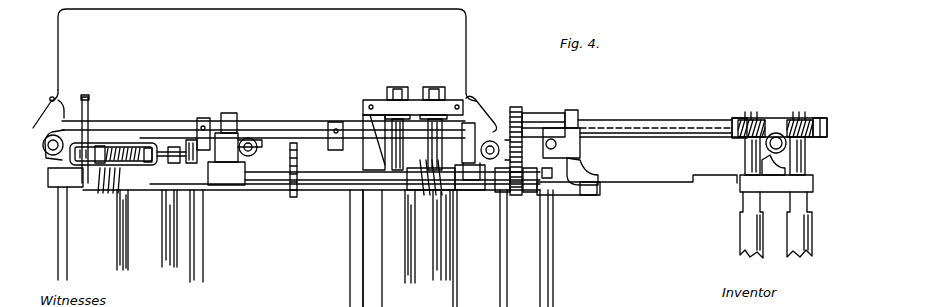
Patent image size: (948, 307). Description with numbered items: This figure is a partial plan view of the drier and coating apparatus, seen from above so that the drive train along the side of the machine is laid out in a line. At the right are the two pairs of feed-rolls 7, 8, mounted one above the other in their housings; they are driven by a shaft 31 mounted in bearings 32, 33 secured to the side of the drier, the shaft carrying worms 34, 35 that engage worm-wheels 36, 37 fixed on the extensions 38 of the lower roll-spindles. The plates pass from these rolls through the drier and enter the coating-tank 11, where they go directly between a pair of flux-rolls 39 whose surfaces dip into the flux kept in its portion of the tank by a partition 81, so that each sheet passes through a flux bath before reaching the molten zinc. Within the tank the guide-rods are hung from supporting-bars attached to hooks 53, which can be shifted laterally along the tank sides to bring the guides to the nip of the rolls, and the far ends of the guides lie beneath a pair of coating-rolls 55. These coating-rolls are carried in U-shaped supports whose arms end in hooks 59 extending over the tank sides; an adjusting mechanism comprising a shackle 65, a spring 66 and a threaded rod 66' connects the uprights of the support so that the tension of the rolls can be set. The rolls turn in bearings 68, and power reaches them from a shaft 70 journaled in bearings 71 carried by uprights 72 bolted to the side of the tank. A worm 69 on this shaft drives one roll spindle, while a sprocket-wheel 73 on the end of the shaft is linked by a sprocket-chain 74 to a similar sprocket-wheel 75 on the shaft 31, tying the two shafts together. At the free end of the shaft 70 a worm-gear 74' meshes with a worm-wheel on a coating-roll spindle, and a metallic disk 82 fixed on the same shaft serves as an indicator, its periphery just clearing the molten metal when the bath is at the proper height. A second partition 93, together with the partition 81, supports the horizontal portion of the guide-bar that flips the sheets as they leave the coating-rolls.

The feed-roll 7 is at (800, 232).
The feed-roll 8 is at (747, 238).
The coating-tank 11 is at (230, 236).
The shaft 31 is at (642, 125).
The bearing 32 is at (548, 120).
The bearing 33 is at (776, 120).
The worm 34 is at (800, 118).
The worm 35 is at (758, 112).
The worm-wheel 36 is at (818, 124).
The worm-wheel 37 is at (735, 120).
The extension 38 is at (745, 157).
The flux-roll 39 is at (388, 262).
The hook 53 is at (336, 122).
The coating-roll 55 is at (115, 215).
The hook 59 is at (88, 104).
The shackle 65 is at (127, 147).
The spring 66 is at (131, 128).
The threaded rod 66' is at (174, 121).
The bearing 68 is at (380, 105).
The worm 69 is at (435, 196).
The shaft 70 is at (318, 172).
The bearing 71 is at (240, 168).
The upright 72 is at (252, 140).
The sprocket-wheel 73 is at (515, 196).
The sprocket-chain 74 is at (526, 150).
The worm-gear 74' is at (127, 188).
The sprocket-wheel 75 is at (517, 107).
The partition 81 is at (365, 250).
The metallic disk 82 is at (298, 197).
The partition 93 is at (204, 262).